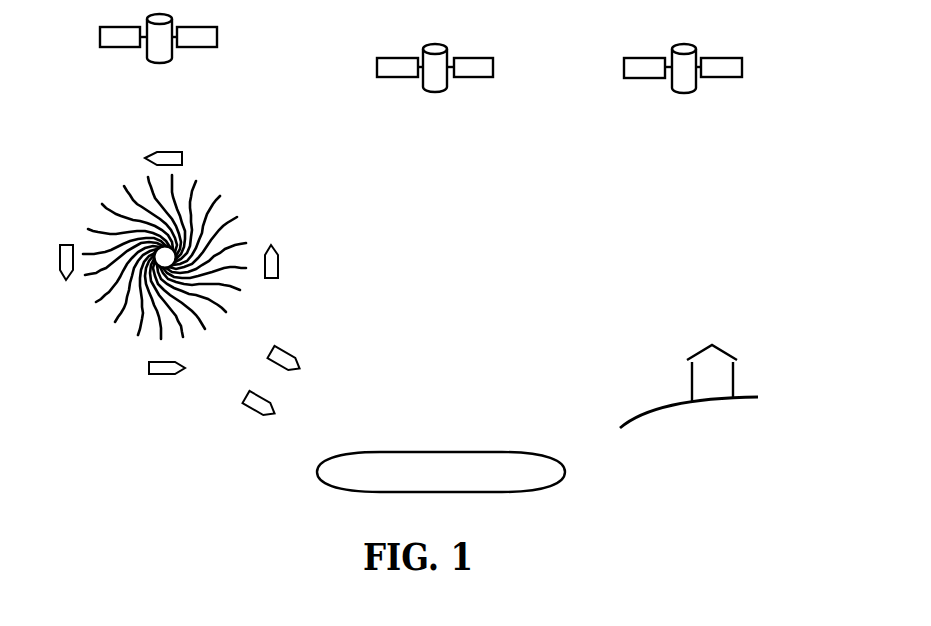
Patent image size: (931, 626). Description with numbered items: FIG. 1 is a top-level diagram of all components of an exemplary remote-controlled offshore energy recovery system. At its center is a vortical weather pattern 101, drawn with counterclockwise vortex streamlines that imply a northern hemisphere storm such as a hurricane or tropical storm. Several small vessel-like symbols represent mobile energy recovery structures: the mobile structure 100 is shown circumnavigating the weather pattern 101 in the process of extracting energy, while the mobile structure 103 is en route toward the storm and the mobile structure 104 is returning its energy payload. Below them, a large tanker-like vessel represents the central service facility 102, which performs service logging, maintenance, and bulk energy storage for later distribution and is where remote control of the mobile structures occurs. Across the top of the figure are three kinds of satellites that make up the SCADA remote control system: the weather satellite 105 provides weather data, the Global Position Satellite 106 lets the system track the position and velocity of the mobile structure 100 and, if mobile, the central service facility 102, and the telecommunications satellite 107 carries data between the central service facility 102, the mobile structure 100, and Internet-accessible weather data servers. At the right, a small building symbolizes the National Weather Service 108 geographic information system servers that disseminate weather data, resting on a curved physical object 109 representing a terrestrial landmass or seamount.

The mobile structure 100 is at (160, 152).
The weather pattern 101 is at (208, 198).
The central service facility 102 is at (447, 452).
The mobile structure 103 is at (277, 347).
The mobile structure 104 is at (253, 387).
The weather satellite 105 is at (100, 33).
The Global Position Satellite 106 is at (377, 65).
The telecommunications satellite 107 is at (624, 65).
The National Weather Service 108 is at (722, 352).
The physical object 109 is at (633, 410).